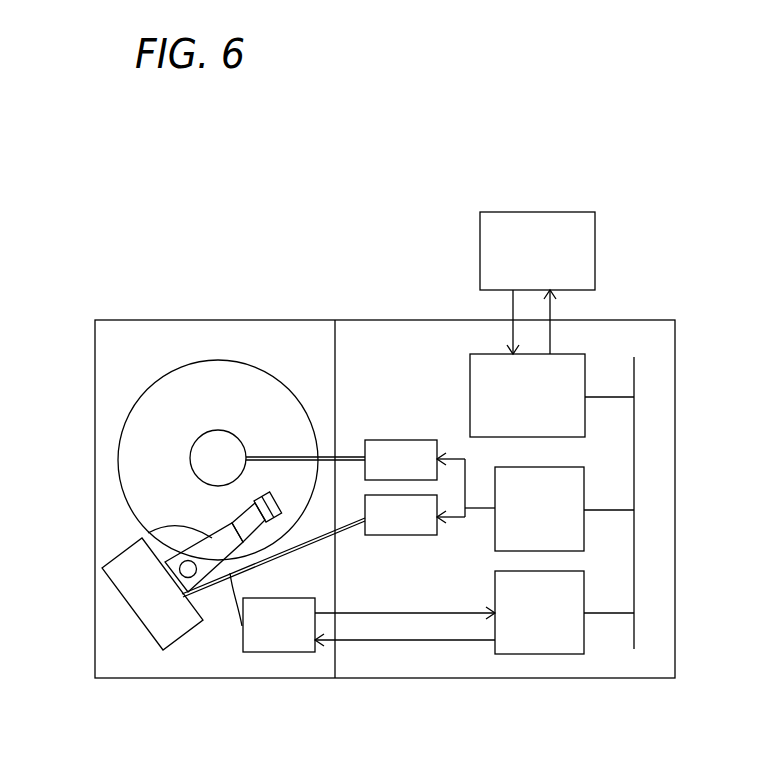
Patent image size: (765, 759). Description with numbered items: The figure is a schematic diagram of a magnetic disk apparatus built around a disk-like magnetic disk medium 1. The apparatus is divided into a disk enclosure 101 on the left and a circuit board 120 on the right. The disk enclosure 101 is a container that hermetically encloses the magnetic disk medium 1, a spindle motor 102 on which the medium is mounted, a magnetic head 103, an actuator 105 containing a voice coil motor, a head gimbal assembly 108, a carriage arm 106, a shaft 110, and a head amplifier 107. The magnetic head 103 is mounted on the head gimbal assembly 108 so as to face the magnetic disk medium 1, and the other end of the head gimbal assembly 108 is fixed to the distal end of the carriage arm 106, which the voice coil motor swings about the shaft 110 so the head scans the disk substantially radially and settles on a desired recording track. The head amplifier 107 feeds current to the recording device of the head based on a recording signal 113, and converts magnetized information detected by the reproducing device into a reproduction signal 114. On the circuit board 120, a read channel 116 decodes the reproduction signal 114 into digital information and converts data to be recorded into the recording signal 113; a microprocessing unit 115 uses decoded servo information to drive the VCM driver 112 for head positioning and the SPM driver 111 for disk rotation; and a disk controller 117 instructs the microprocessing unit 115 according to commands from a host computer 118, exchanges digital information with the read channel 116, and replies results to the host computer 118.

The magnetic disk medium 1 is at (222, 372).
The disk enclosure 101 is at (311, 499).
The circuit board 120 is at (491, 490).
The spindle motor 102 is at (190, 458).
The magnetic head 103 is at (258, 508).
The head gimbal assembly 108 is at (250, 520).
The carriage arm 106 is at (148, 533).
The actuator 105 is at (148, 608).
The shaft 110 is at (194, 574).
The head amplifier 107 is at (277, 652).
The SPM driver 111 is at (415, 460).
The VCM driver 112 is at (415, 497).
The recording signal 113 is at (380, 640).
The reproduction signal 114 is at (448, 613).
The microprocessing unit 115 is at (524, 509).
The read channel 116 is at (539, 612).
The disk controller 117 is at (527, 363).
The host computer 118 is at (537, 283).